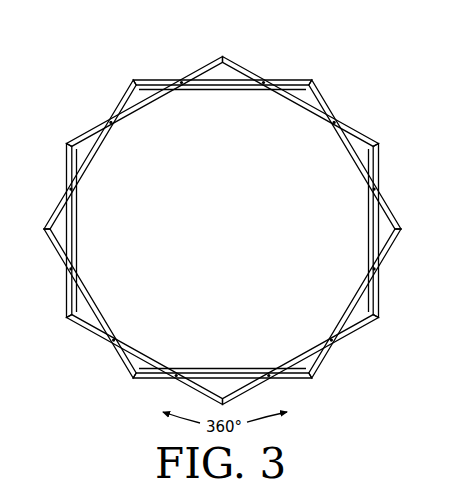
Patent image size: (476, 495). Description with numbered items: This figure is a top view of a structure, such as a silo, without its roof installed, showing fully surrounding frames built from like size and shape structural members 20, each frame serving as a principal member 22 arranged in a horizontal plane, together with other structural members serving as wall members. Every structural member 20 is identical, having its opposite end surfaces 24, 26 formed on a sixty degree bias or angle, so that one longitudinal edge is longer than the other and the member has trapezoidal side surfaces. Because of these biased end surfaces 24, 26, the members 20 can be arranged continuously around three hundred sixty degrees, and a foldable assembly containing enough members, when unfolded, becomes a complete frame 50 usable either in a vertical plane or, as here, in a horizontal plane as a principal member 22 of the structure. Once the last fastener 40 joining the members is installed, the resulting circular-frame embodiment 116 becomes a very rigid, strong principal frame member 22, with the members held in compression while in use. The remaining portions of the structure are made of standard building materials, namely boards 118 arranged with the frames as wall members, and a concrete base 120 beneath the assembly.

The like size and shape structural member 20 is at (86, 124).
The principal member 22 is at (338, 356).
The end surface 24 is at (43, 236).
The end surface 26 is at (43, 224).
The fastener 40 is at (376, 190).
The complete frame 50 is at (128, 79).
The circular-frame embodiment 116 is at (63, 140).
The boards 118 is at (141, 113).
The concrete base 120 is at (248, 136).